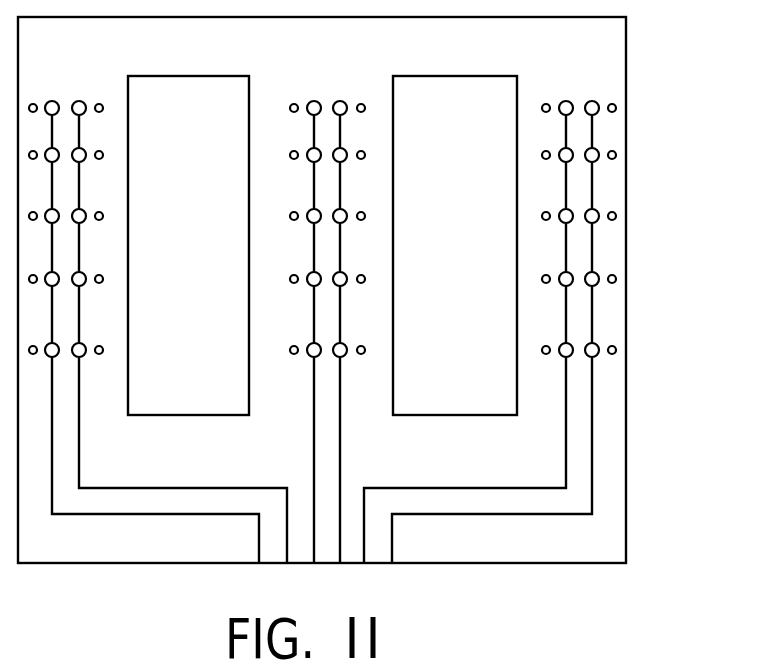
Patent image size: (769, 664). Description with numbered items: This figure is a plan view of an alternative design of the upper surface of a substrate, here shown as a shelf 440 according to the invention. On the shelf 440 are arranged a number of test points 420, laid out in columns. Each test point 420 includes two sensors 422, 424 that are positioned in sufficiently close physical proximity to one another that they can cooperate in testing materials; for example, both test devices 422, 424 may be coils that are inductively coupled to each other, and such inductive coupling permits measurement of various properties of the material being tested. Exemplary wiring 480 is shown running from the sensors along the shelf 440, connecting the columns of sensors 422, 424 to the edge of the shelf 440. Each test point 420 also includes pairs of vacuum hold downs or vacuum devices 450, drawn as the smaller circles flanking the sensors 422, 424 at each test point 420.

The shelf 440 is at (626, 193).
The vacuum devices 450 is at (547, 274).
The test point 420 is at (623, 330).
The sensor 422 is at (597, 356).
The sensor 424 is at (563, 357).
The wiring 480 is at (592, 492).